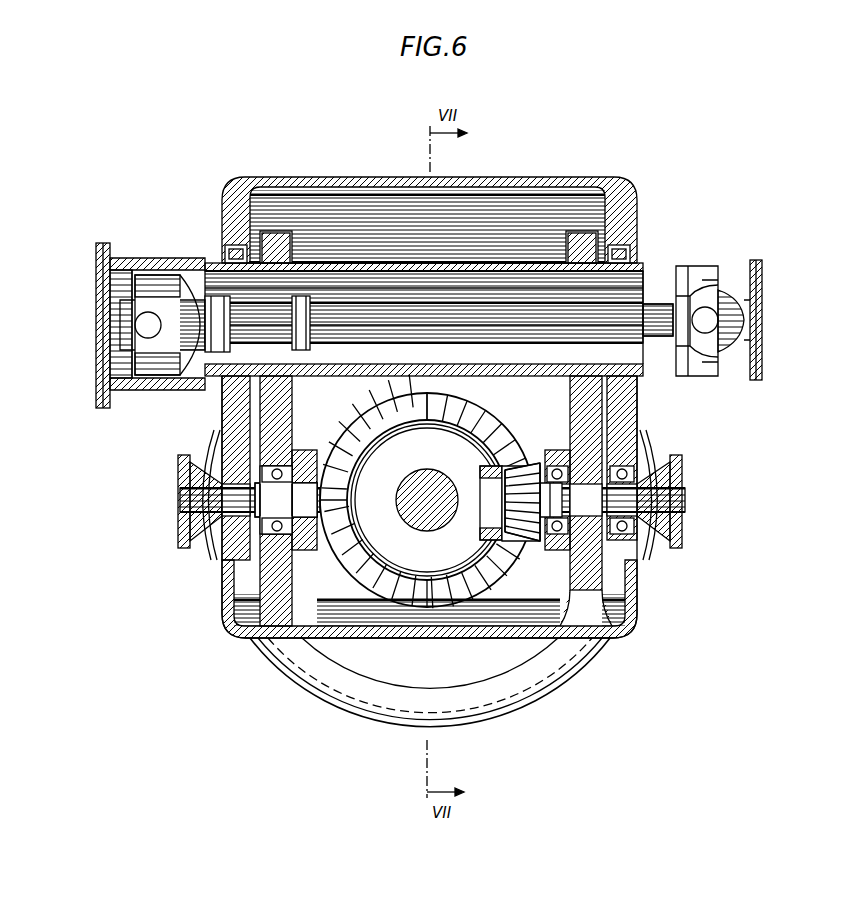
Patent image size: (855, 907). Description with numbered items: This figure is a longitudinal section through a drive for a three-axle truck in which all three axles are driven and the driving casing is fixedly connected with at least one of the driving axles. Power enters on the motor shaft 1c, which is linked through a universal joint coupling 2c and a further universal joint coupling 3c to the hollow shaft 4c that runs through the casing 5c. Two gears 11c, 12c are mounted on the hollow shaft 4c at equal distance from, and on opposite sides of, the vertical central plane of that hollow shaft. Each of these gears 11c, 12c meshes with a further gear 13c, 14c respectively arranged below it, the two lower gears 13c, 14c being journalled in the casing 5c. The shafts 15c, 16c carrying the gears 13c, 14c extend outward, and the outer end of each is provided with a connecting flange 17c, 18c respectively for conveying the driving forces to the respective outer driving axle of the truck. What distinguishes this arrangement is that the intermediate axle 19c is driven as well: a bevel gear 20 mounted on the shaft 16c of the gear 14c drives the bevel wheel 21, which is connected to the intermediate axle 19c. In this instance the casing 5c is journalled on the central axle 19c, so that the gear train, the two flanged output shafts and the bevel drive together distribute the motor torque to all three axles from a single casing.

The motor shaft 1c is at (413, 303).
The universal joint coupling 2c is at (744, 300).
The universal joint coupling 3c is at (96, 303).
The hollow shaft 4c is at (305, 378).
The casing 5c is at (640, 201).
The gear 11c is at (292, 246).
The gear 12c is at (566, 246).
The gear 13c is at (292, 578).
The gear 14c is at (580, 556).
The shaft 15c is at (232, 510).
The shaft 16c is at (635, 534).
The connecting flange 17c is at (178, 466).
The connecting flange 18c is at (682, 466).
The intermediate axle 19c is at (420, 522).
The bevel gear 20 is at (508, 462).
The bevel wheel 21 is at (363, 463).